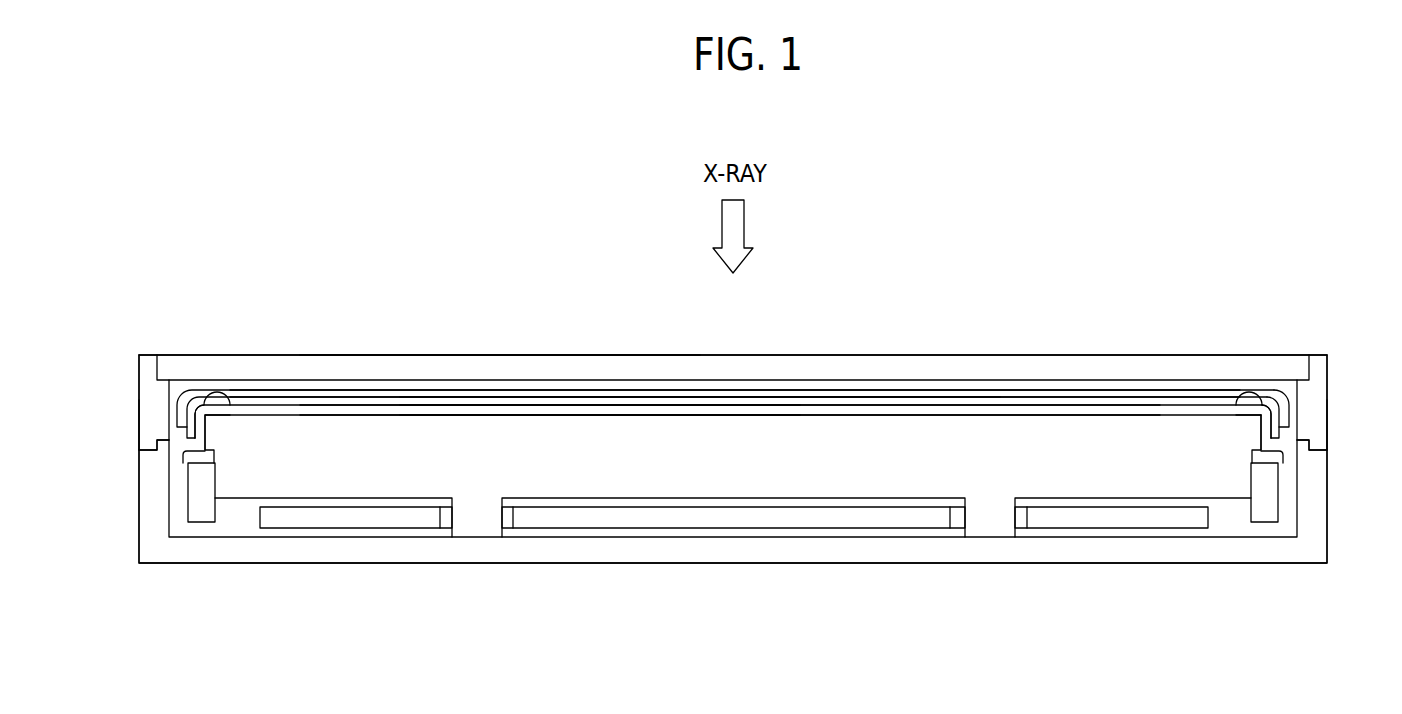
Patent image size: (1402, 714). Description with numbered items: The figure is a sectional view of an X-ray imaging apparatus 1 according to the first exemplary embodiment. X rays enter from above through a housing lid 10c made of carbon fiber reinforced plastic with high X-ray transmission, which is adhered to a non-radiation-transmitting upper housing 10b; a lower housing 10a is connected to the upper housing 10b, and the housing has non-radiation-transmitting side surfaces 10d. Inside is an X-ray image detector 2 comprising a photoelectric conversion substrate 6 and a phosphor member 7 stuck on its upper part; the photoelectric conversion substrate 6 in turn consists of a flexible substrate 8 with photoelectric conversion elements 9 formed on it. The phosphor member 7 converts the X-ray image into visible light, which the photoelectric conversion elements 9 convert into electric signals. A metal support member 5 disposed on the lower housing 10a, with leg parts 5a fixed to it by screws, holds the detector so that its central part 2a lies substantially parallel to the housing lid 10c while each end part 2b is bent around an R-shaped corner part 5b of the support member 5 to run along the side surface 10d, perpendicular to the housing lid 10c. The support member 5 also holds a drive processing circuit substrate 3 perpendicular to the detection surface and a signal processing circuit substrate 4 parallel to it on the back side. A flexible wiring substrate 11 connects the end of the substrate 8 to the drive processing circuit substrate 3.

The X-ray imaging apparatus 1 is at (1288, 243).
The X-ray image detector 2 is at (767, 646).
The central part 2a is at (819, 375).
The end part 2b is at (180, 369).
The drive processing circuit substrate 3 is at (207, 505).
The signal processing circuit substrate 4 is at (893, 520).
The support member 5 is at (1085, 455).
The leg part 5a is at (460, 523).
The corner part 5b is at (212, 425).
The photoelectric conversion substrate 6 is at (715, 606).
The phosphor member 7 is at (852, 398).
The flexible substrate 8 is at (583, 413).
The photoelectric conversion elements 9 is at (657, 405).
The lower housing 10a is at (1310, 545).
The upper housing 10b is at (1315, 382).
The housing lid 10c is at (500, 368).
The side surface 10d is at (143, 428).
The flexible wiring substrate 11 is at (185, 457).